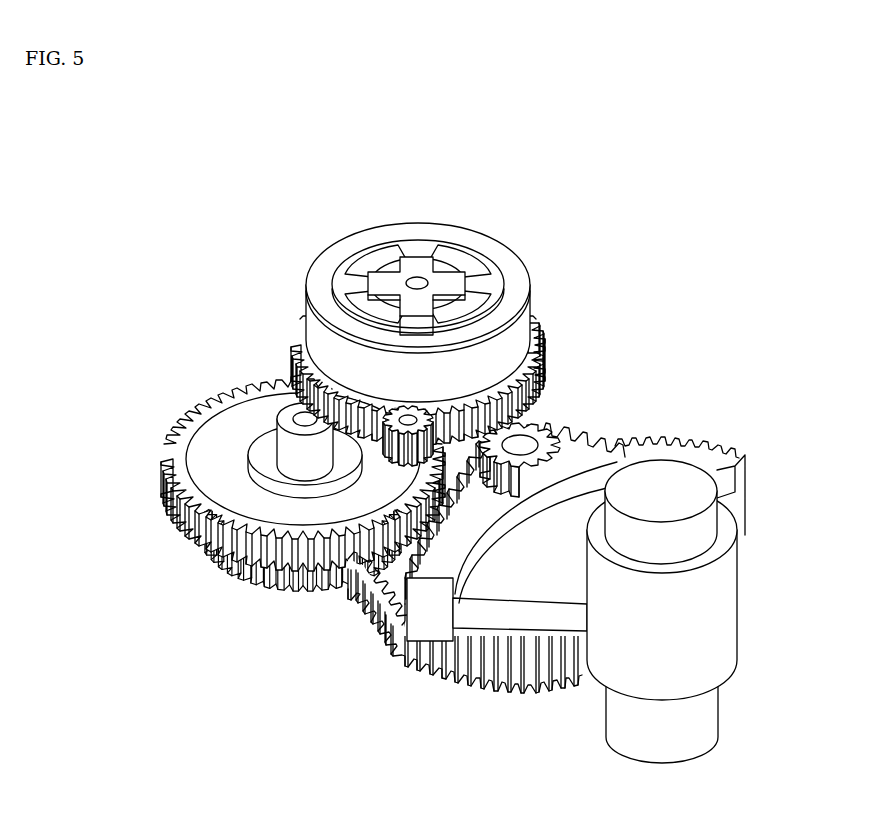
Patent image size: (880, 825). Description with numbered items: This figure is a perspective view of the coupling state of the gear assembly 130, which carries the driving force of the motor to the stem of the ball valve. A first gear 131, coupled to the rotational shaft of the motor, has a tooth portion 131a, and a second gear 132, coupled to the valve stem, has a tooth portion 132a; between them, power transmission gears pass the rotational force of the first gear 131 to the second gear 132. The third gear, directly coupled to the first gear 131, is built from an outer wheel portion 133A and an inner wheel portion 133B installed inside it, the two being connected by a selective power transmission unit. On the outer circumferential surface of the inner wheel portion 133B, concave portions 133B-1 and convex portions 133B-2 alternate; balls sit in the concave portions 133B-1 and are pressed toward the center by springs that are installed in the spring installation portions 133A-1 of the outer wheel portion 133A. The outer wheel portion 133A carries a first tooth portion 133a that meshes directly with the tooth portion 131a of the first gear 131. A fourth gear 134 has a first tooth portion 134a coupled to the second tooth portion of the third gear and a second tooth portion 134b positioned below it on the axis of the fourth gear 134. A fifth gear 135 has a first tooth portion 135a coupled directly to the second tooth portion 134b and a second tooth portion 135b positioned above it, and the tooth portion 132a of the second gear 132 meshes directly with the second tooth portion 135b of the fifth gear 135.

The gear assembly 130 is at (210, 152).
The first gear 131 is at (418, 408).
The tooth portion 131a is at (437, 445).
The second gear 132 is at (532, 575).
The tooth portion 132a is at (700, 447).
The outer wheel portion 133A is at (320, 291).
The spring installation portion 133A-1 is at (365, 262).
The inner wheel portion 133B is at (404, 252).
The concave portion 133B-1 is at (437, 267).
The convex portion 133B-2 is at (420, 263).
The first tooth portion 133a is at (285, 355).
The fourth gear 134 is at (200, 463).
The first tooth portion 134a is at (160, 512).
The second tooth portion 134b is at (267, 588).
The fifth gear 135 is at (592, 432).
The first tooth portion 135a is at (405, 623).
The second tooth portion 135b is at (543, 428).